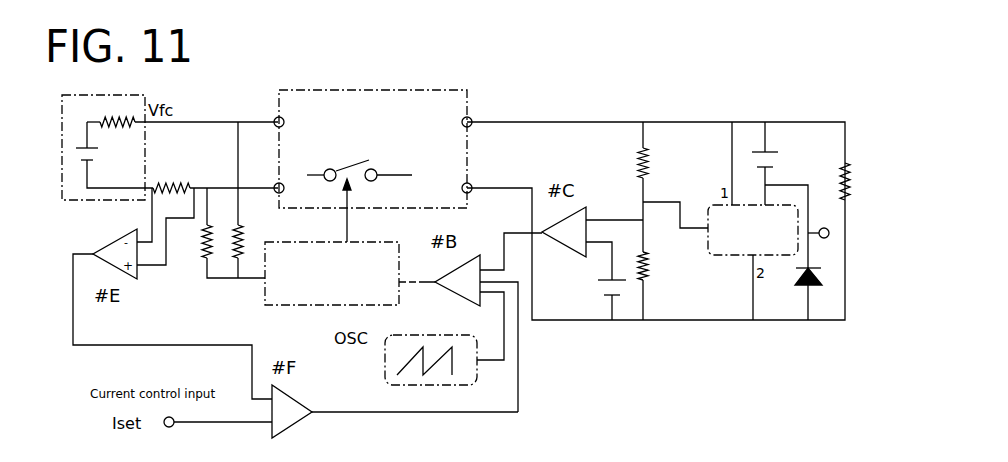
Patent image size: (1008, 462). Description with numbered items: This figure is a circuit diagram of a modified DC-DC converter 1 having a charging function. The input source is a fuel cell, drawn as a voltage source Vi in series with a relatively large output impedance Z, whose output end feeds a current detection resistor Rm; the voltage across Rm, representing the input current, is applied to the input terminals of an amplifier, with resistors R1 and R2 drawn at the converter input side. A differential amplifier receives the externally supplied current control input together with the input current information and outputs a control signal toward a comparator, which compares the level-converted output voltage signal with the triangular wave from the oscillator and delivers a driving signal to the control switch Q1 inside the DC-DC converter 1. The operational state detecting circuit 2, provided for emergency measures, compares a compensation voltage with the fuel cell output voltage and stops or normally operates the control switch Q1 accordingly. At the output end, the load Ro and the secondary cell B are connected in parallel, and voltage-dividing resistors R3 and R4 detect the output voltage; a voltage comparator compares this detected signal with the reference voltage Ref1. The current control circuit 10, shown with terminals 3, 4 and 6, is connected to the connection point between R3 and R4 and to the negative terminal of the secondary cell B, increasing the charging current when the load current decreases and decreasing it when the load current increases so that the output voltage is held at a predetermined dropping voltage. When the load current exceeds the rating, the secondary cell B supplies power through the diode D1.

The DC-DC converter 1 is at (417, 149).
The operational state detecting circuit 2 is at (265, 296).
The current control circuit 10 is at (708, 248).
The current control circuit input terminal 3 is at (675, 215).
The current control circuit battery terminal 4 is at (758, 195).
The current control circuit output terminal 6 is at (818, 224).
The control switch Q1 is at (359, 164).
The resistor R1 is at (252, 200).
The resistor R2 is at (219, 233).
The voltage-dividing resistor R3 is at (627, 187).
The voltage-dividing resistor R4 is at (653, 286).
The current detection resistor Rm is at (171, 178).
The load Ro is at (830, 181).
The secondary cell B is at (772, 153).
The diode D1 is at (803, 289).
The output impedance Z is at (111, 135).
The input voltage source Vi is at (114, 155).
The reference voltage Ref1 is at (590, 281).